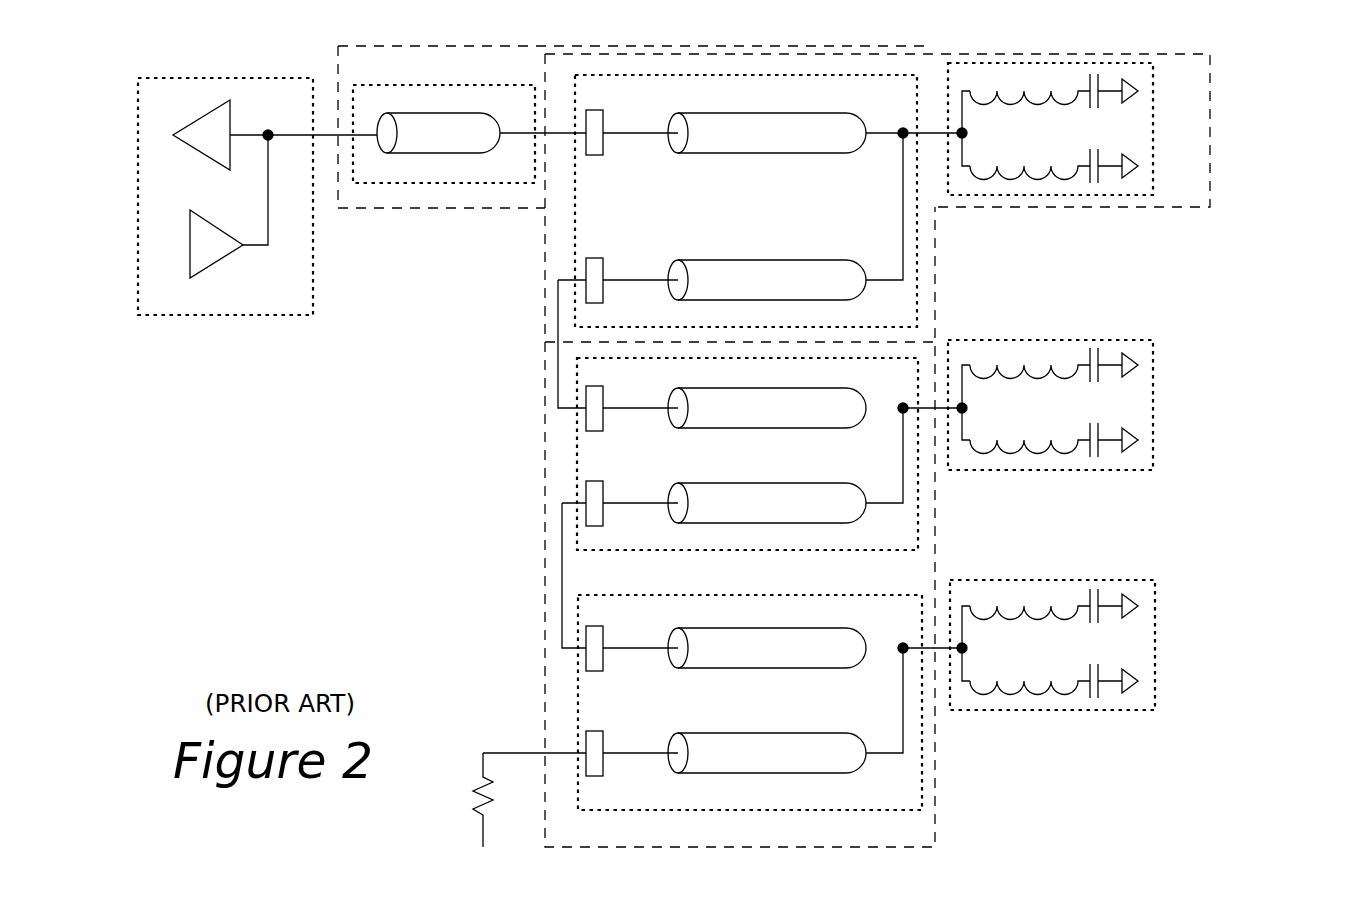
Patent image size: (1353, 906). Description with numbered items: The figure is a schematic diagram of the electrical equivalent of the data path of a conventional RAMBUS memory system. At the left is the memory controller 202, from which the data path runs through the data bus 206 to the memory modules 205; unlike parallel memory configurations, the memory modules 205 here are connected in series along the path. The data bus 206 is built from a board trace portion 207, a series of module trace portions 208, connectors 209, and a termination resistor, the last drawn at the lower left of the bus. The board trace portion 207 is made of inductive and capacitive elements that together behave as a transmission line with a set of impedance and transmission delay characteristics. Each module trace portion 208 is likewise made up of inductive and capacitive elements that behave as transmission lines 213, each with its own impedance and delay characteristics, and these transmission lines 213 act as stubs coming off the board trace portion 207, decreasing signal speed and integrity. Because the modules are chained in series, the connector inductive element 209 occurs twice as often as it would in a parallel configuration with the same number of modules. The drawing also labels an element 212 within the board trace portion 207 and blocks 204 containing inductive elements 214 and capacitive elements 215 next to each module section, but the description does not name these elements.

The memory controller 202 is at (313, 78).
The receiver unit 204 is at (1153, 165).
The memory modules 205 is at (1210, 130).
The data bus 206 is at (938, 805).
The board trace portion 207 is at (480, 183).
The module trace portions 208 is at (917, 228).
The connector 209 is at (600, 155).
The delay line 212 is at (410, 153).
The transmission lines 213 is at (800, 153).
The inductor 214 is at (996, 77).
The capacitor 215 is at (1102, 73).